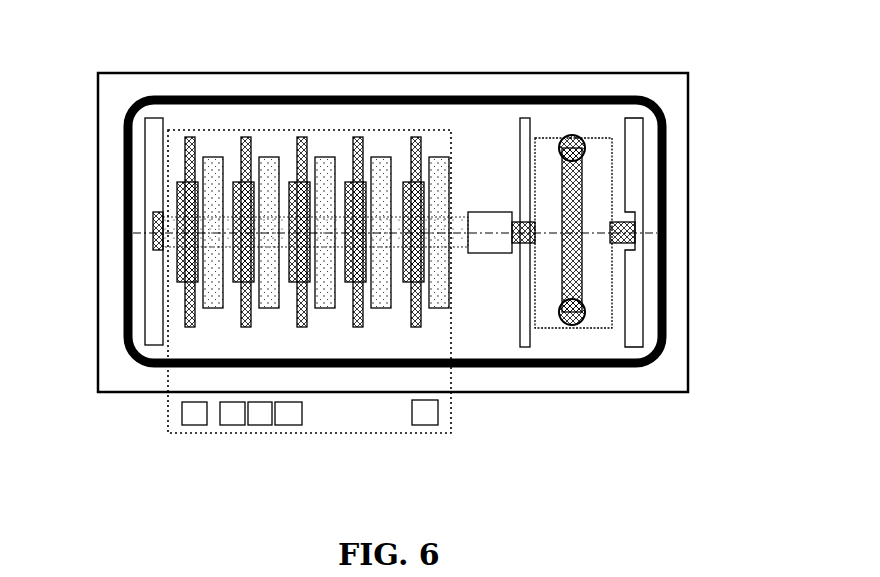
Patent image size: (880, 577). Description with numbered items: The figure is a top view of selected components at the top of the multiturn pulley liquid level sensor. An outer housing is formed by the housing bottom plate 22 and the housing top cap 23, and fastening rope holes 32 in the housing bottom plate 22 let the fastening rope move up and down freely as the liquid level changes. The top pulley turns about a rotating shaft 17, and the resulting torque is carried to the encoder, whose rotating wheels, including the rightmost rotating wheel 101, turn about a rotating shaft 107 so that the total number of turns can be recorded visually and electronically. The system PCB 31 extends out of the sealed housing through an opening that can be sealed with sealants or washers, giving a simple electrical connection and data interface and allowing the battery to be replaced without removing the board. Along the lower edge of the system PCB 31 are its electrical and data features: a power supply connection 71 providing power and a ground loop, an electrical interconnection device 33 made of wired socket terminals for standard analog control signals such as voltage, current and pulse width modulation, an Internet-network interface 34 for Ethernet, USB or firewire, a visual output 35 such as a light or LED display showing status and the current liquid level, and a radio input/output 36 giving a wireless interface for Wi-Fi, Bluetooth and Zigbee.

The housing bottom plate 22 is at (98, 300).
The housing top cap 23 is at (135, 363).
The rotating shaft 17 is at (668, 233).
The rotating shaft 107 is at (135, 223).
The rightmost rotating wheel 101 is at (437, 130).
The fastening rope holes 32 is at (573, 135).
The system PCB 31 is at (452, 402).
The electrical interconnection device 33 is at (177, 417).
The Internet-network interface 34 is at (220, 425).
The visual output 35 is at (265, 425).
The radio input/output 36 is at (293, 425).
The power supply connection 71 is at (427, 425).